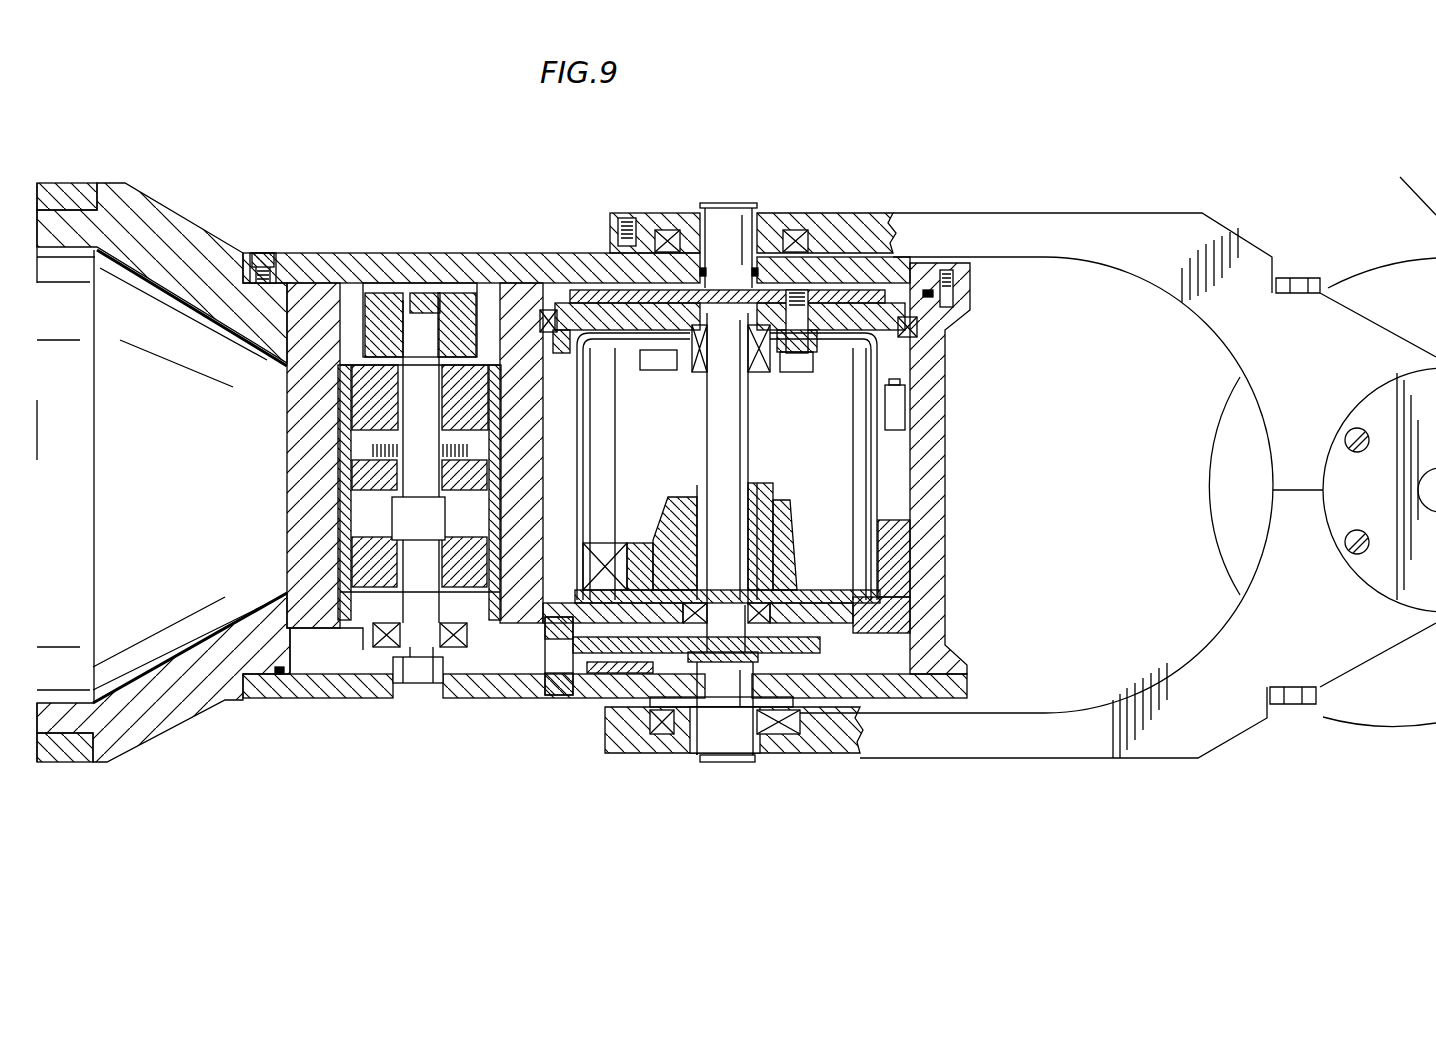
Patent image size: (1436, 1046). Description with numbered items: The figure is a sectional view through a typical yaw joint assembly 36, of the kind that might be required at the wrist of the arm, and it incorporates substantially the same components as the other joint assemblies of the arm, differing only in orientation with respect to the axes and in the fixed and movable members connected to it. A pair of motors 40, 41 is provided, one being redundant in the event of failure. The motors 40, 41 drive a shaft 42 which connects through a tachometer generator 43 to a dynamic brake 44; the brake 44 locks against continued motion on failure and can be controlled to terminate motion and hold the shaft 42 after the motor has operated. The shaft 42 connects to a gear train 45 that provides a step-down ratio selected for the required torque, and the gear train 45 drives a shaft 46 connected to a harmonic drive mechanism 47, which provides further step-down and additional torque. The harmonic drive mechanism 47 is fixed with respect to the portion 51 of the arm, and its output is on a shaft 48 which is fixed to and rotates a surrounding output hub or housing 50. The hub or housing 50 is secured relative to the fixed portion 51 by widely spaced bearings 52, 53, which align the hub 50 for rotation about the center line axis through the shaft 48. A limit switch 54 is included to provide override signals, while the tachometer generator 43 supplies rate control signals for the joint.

The yaw joint assembly 36 is at (330, 773).
The motor 40 is at (337, 472).
The motor 41 is at (337, 553).
The shaft 42 is at (443, 620).
The tachometer generator 43 is at (343, 383).
The dynamic brake 44 is at (478, 330).
The gear train 45 is at (613, 668).
The shaft 46 is at (740, 437).
The harmonic drive mechanism 47 is at (880, 462).
The shaft 48 is at (727, 203).
The output hub or housing 50 is at (1068, 213).
The portion of the arm 51 is at (77, 183).
The bearing 52 is at (795, 232).
The bearing 53 is at (667, 733).
The limit switch 54 is at (905, 403).